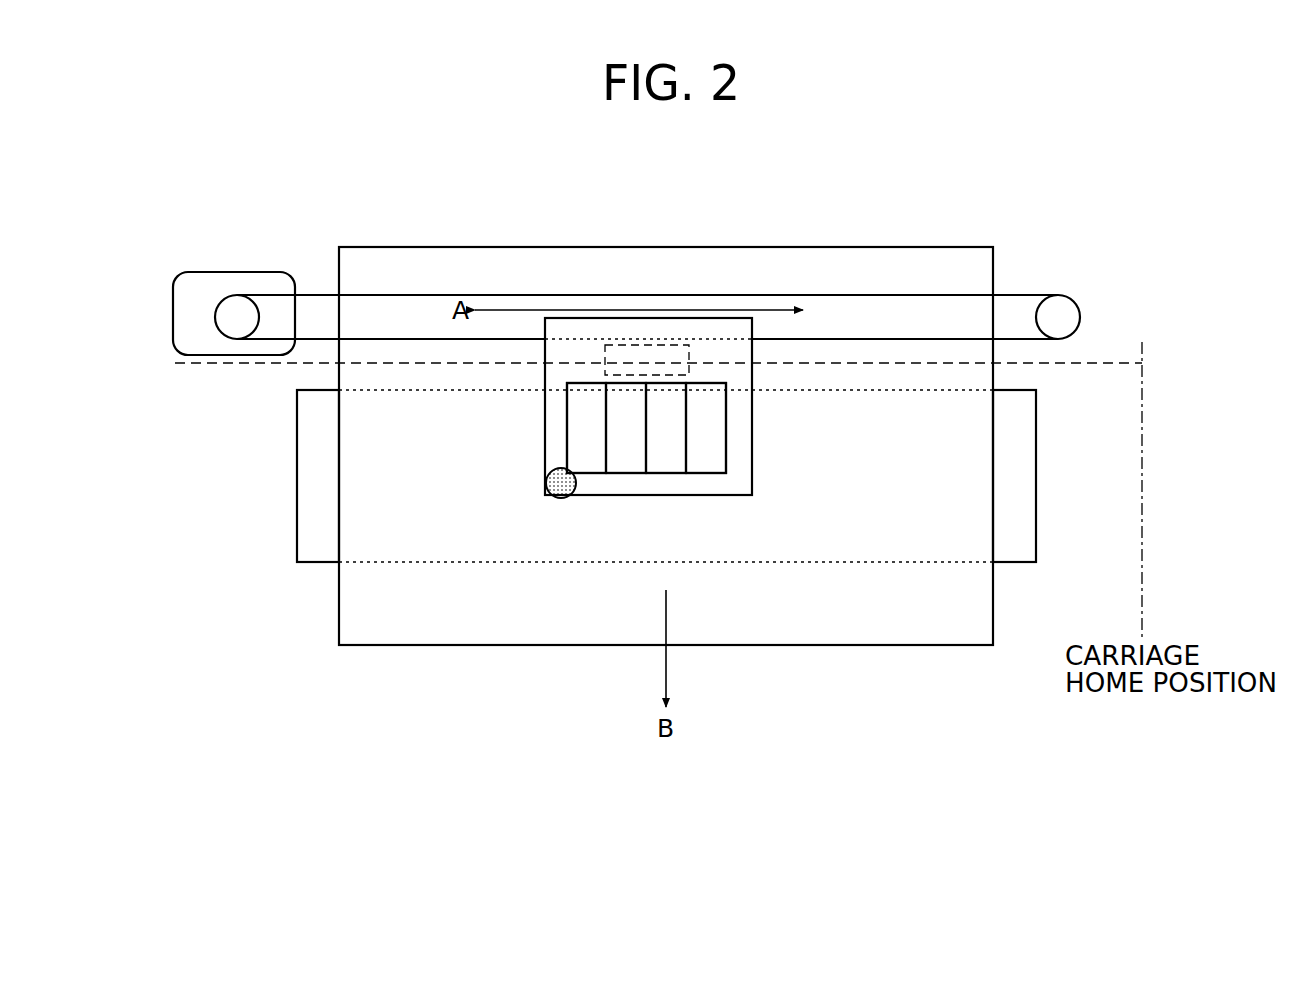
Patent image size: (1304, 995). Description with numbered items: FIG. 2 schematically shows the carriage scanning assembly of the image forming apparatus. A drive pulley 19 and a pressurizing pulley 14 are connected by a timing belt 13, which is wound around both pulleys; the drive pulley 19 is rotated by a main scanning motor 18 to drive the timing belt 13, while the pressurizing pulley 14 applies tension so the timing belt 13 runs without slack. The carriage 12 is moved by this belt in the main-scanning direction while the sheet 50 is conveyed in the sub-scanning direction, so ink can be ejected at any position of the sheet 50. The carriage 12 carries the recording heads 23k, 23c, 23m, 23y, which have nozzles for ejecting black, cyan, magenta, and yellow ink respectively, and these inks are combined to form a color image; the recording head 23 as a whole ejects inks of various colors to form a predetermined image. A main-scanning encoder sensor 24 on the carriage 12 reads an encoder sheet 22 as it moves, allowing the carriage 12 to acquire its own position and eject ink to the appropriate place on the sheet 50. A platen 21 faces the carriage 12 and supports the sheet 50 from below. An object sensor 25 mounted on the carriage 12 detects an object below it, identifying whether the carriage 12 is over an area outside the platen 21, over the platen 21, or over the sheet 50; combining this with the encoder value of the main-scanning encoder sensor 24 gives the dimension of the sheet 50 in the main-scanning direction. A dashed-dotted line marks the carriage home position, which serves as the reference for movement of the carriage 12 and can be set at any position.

The carriage 12 is at (640, 325).
The timing belt 13 is at (1012, 295).
The pressurizing pulley 14 is at (1067, 322).
The main scanning motor 18 is at (215, 290).
The drive pulley 19 is at (228, 325).
The platen 21 is at (318, 490).
The encoder sheet 22 is at (230, 368).
The recording head 23 is at (681, 459).
The recording head 23y is at (761, 428).
The recording head 23m is at (670, 439).
The recording head 23c is at (633, 463).
The recording head 23k is at (578, 438).
The main-scanning encoder sensor 24 is at (682, 350).
The object sensor 25 is at (563, 483).
The sheet 50 is at (373, 620).